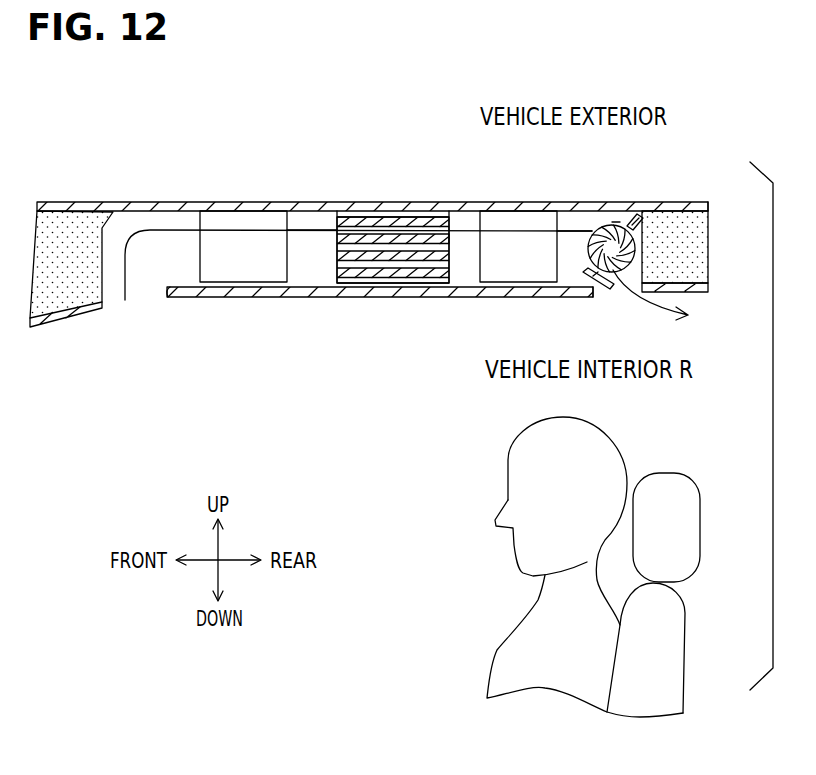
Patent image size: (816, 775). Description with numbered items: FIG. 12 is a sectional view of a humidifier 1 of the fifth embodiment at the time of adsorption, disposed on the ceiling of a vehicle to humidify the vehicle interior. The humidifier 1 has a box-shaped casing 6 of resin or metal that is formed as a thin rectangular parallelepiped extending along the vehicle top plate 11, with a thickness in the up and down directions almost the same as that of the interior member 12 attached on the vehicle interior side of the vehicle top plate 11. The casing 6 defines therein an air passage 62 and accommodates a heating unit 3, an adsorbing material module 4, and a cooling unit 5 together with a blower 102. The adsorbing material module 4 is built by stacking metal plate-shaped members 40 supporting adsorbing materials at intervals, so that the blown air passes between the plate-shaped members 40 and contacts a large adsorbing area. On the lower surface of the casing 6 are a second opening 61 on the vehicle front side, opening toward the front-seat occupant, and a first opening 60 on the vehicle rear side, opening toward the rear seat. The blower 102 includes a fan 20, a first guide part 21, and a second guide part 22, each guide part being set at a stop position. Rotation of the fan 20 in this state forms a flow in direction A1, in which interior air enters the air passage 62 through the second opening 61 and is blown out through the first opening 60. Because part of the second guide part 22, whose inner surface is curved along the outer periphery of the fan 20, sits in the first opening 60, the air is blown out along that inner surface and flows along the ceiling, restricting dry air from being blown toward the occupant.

The humidifier 1 is at (418, 311).
The heating unit 3 is at (508, 212).
The adsorbing material module 4 is at (421, 212).
The cooling unit 5 is at (237, 212).
The casing 6 is at (101, 217).
The vehicle top plate 11 is at (341, 207).
The interior member 12 is at (314, 292).
The fan 20 is at (626, 231).
The first guide part 21 is at (642, 220).
The second guide part 22 is at (580, 275).
The plate-shaped members 40 is at (450, 240).
The first opening 60 is at (594, 292).
The second opening 61 is at (166, 292).
The air passage 62 is at (303, 219).
The blower 102 is at (621, 214).
The direction of blown air at time of adsorption A1 is at (567, 228).